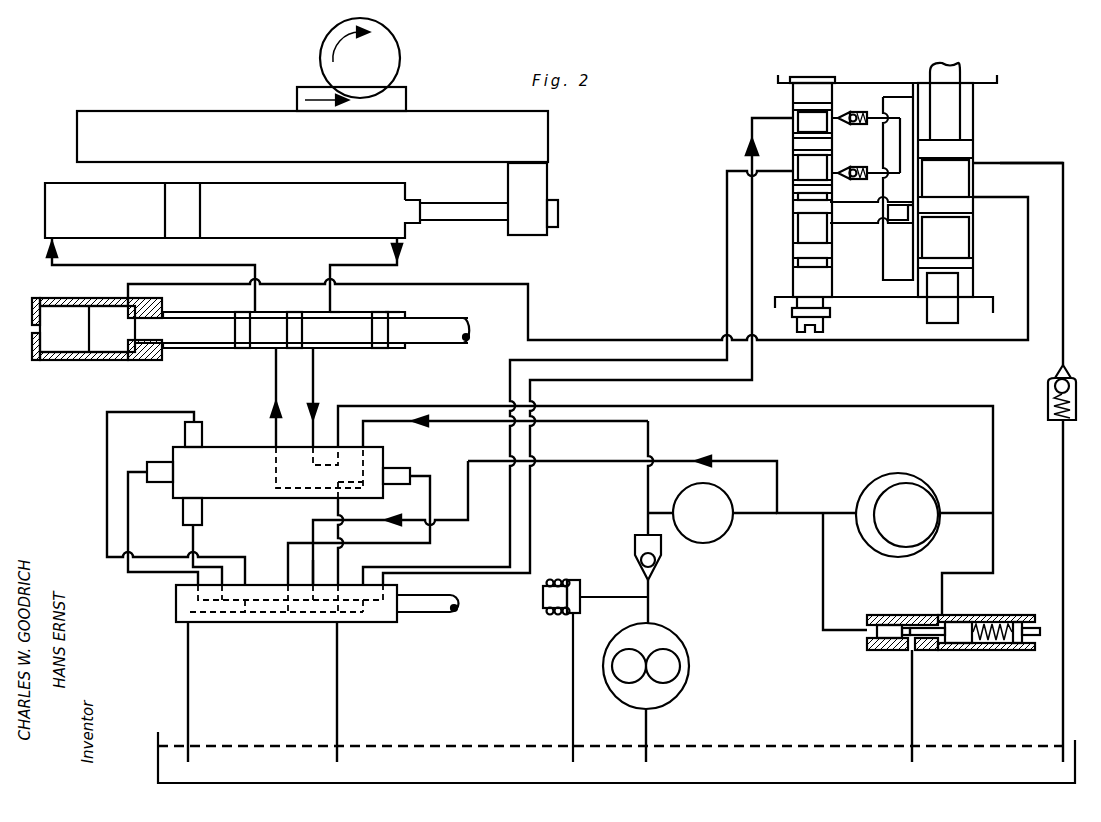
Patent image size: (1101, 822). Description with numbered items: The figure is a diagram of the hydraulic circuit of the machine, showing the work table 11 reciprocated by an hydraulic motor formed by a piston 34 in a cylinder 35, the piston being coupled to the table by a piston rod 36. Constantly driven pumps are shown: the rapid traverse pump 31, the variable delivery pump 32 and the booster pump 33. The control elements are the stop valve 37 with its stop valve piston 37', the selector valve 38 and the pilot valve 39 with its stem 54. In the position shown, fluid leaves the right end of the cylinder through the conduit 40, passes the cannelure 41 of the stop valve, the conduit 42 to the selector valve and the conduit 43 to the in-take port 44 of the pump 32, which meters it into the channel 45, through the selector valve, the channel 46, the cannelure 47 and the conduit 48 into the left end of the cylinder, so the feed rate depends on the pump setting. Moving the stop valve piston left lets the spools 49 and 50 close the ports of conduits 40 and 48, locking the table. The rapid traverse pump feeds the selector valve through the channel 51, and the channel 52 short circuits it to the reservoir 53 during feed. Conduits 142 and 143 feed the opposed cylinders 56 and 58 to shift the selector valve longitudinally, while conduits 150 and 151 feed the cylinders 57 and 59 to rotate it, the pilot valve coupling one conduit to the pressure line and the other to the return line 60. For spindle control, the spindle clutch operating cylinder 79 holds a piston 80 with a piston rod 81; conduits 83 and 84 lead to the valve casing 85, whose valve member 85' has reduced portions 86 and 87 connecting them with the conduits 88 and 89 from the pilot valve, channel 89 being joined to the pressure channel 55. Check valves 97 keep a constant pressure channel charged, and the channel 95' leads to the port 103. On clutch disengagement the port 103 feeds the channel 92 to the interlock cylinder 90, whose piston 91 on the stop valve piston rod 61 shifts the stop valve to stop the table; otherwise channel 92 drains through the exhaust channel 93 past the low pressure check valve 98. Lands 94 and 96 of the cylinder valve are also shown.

The work table 11 is at (104, 112).
The rapid traverse pump 31 is at (688, 642).
The variable delivery pump 32 is at (916, 472).
The booster pump 33 is at (716, 530).
The piston 34 is at (183, 192).
The cylinder 35 is at (45, 211).
The piston rod 36 is at (447, 220).
The stop valve 37 is at (352, 302).
The stop valve piston 37' is at (392, 302).
The selector valve 38 is at (258, 440).
The pilot valve 39 is at (270, 588).
The conduit 40 is at (330, 300).
The cannelure 41 is at (348, 335).
The conduit 42 is at (313, 388).
The conduit 43 is at (914, 406).
The in-take port 44 is at (966, 508).
The channel 45 is at (808, 513).
The channel 46 is at (276, 390).
The cannelure 47 is at (250, 345).
The conduit 48 is at (98, 266).
The spool 49 is at (296, 348).
The spool 50 is at (380, 348).
The channel 51 is at (432, 422).
The channel 52 is at (339, 558).
The reservoir 53 is at (408, 746).
The pilot valve stem 54 is at (428, 616).
The pressure channel 55 is at (318, 567).
The cylinder 56 is at (158, 482).
The cylinder 57 is at (203, 513).
The cylinder 58 is at (400, 470).
The cylinder 59 is at (185, 432).
The return line 60 is at (189, 648).
The stop valve piston rod 61 is at (437, 313).
The spindle clutch operating cylinder 79 is at (973, 128).
The piston 80 is at (973, 150).
The piston rod 81 is at (960, 75).
The conduit 83 is at (883, 240).
The conduit 84 is at (903, 78).
The valve casing 85 is at (795, 207).
The valve member 85' is at (830, 248).
The reduced portion 86 is at (798, 130).
The reduced portion 87 is at (798, 176).
The conduit 88 is at (727, 265).
The conduit 89 is at (752, 250).
The interlock cylinder 90 is at (66, 362).
The piston 91 is at (90, 325).
The channel 92 is at (195, 285).
The exhaust channel 93 is at (1056, 168).
The valve land 94 is at (969, 183).
The channel 95' is at (883, 223).
The valve land 96 is at (969, 251).
The check valve 97 is at (850, 110).
The low pressure check valve 98 is at (1067, 372).
The port 103 is at (910, 218).
The conduit 142 is at (128, 510).
The conduit 143 is at (431, 538).
The conduit 150 is at (190, 535).
The conduit 151 is at (107, 470).